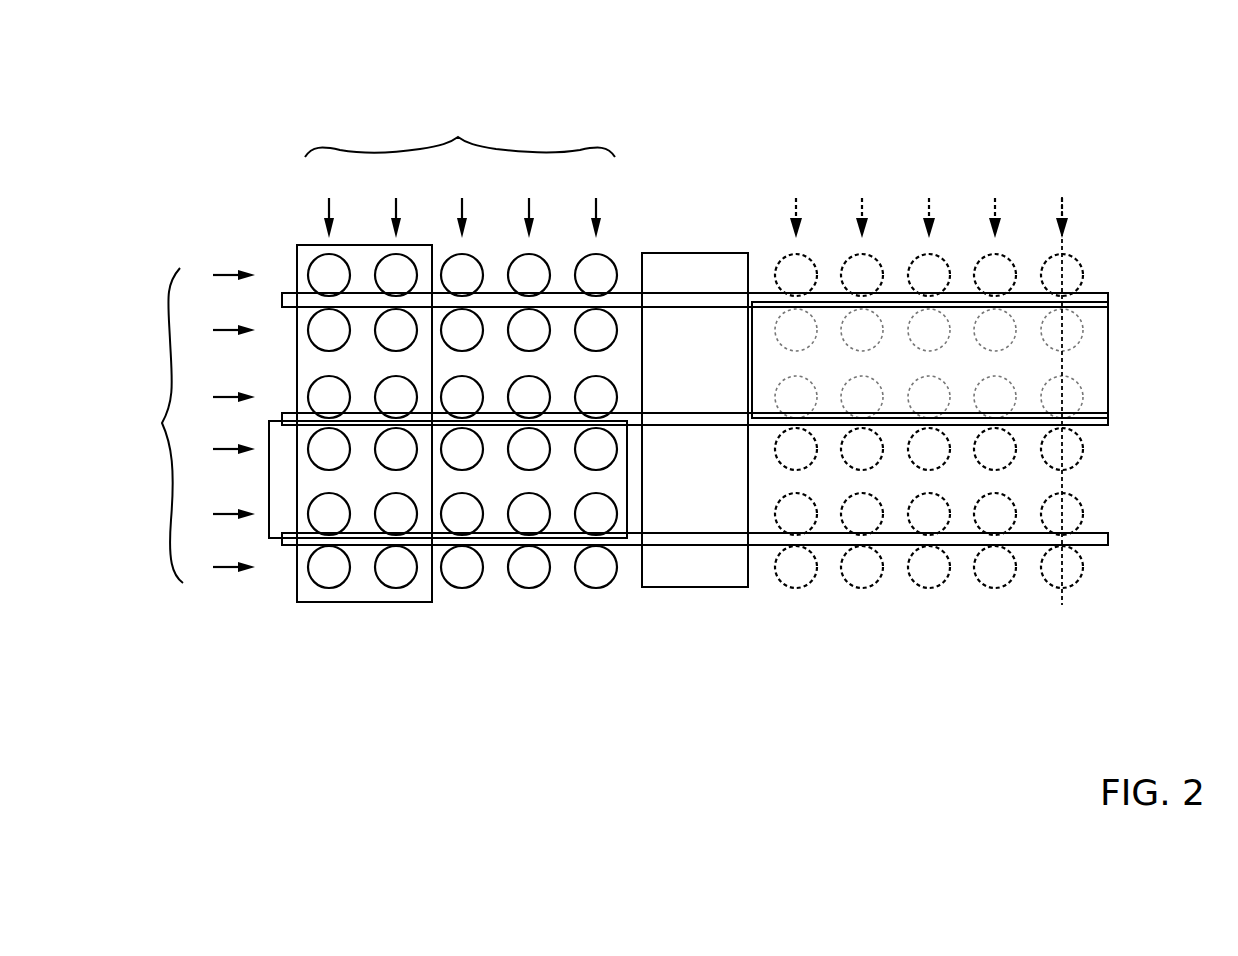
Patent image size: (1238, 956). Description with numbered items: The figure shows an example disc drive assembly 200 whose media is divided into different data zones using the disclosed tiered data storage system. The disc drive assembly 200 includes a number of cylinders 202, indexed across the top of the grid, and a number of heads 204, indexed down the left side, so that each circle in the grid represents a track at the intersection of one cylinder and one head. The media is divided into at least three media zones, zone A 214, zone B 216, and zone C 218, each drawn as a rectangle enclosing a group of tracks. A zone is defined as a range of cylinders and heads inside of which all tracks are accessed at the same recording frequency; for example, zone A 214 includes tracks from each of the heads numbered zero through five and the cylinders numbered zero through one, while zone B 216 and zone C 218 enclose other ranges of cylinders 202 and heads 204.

The disc drive assembly 200 is at (208, 118).
The cylinders 202 is at (455, 134).
The heads 204 is at (187, 598).
The zone A 214 is at (345, 603).
The zone B 216 is at (545, 538).
The zone C 218 is at (1080, 418).